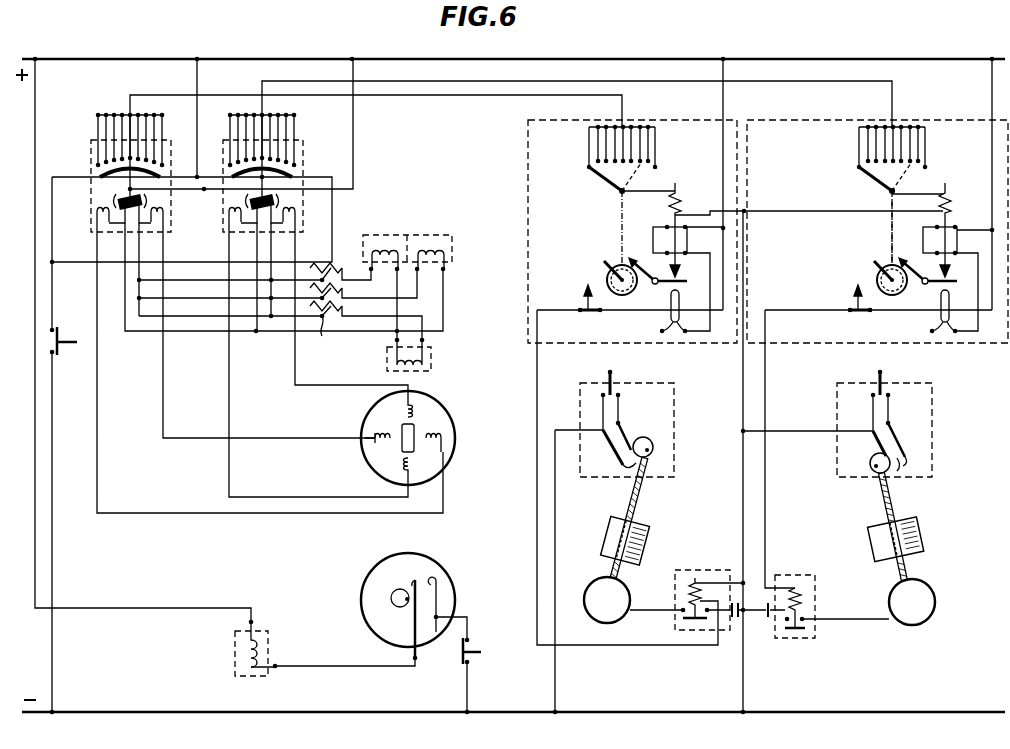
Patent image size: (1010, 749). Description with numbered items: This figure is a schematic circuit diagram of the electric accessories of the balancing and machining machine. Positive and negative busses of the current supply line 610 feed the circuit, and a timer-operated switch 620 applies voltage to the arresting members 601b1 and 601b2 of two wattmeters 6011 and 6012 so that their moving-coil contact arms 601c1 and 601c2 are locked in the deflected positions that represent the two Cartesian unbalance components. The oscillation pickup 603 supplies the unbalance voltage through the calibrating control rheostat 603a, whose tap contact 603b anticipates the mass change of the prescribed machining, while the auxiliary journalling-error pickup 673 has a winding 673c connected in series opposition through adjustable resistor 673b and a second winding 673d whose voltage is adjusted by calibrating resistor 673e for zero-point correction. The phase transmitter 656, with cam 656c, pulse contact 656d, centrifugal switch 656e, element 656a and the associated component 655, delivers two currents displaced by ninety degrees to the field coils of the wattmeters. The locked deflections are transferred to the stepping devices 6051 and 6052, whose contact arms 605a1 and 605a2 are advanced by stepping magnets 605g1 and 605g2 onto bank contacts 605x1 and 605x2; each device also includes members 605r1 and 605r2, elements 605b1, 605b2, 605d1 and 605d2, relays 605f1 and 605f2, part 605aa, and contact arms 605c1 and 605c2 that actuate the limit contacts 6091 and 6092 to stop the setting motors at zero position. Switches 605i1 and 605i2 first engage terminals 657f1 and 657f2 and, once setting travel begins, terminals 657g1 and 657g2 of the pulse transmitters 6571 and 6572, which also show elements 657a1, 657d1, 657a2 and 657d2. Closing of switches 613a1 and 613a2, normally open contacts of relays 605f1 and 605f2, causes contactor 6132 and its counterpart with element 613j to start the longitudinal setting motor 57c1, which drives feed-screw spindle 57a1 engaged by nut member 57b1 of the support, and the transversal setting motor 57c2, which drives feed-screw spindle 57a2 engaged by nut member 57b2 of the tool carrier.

The current supply line 610 is at (89, 58).
The switch 620 is at (51, 340).
The wattmeter 6011 is at (110, 173).
The arresting member 601b1 is at (100, 177).
The contact arm 601c1 is at (126, 189).
The wattmeter 6012 is at (267, 170).
The arresting member 601b2 is at (291, 159).
The contact arm 601c2 is at (229, 169).
The auxiliary pickup 673 is at (426, 235).
The adjustable resistor 673b is at (330, 266).
The pickup winding 673c is at (388, 235).
The second winding 673d is at (441, 236).
The calibrating resistor 673e is at (344, 290).
The oscillation pickup 603 is at (387, 363).
The calibrating control rheostat 603a is at (344, 308).
The tap contact 603b is at (342, 334).
The relay coil 655 is at (236, 647).
The phase transmitter 656 is at (383, 414).
The relay contact 656a is at (365, 454).
The cam 656c is at (396, 599).
The pulse contact 656d is at (441, 599).
The centrifugal switch 656e is at (470, 643).
The stepping device 6051 is at (607, 257).
The bank contacts 605x1 is at (652, 163).
The wiper arm 605r1 is at (584, 166).
The contact arm 605a1 is at (619, 192).
The relay 605f1 is at (679, 198).
The relay 605d1 is at (690, 246).
The contact arm 605c1 is at (603, 262).
The lever 605b1 is at (658, 284).
The stepping magnet 605g1 is at (679, 333).
The limit contact 6091 is at (579, 308).
The switch 605i1 is at (615, 383).
The stepping device 6052 is at (877, 243).
The bank contacts 605x2 is at (918, 148).
The wiper arm 605r2 is at (848, 166).
The contact arm 605a2 is at (870, 214).
The shaft 605aa is at (887, 218).
The relay 605f2 is at (966, 191).
The relay 605d2 is at (960, 246).
The contact arm 605c2 is at (866, 269).
The lever 605b2 is at (928, 284).
The stepping magnet 605g2 is at (965, 330).
The limit contact 6092 is at (841, 294).
The switch 605i2 is at (899, 376).
The pulse transmitter 6571 is at (634, 442).
The terminal 657f1 is at (602, 428).
The terminal 657g1 is at (620, 424).
The pivot 657a1 is at (654, 445).
The contact 657d1 is at (644, 476).
The longitudinal feed-screw spindle 57a1 is at (639, 515).
The nut member 57b1 is at (606, 529).
The longitudinal setting motor 57c1 is at (602, 582).
The pulse transmitter 6572 is at (868, 445).
The terminal 657f2 is at (861, 429).
The terminal 657g2 is at (887, 426).
The pivot 657a2 is at (870, 459).
The contact 657d2 is at (900, 478).
The transversal feed-screw spindle 57a2 is at (878, 517).
The nut member 57b2 is at (917, 531).
The transversal setting motor 57c2 is at (928, 589).
The switch 613a1 is at (687, 630).
The contact pair 613j is at (734, 654).
The contactor 6132 is at (817, 625).
The switch 613a2 is at (808, 631).